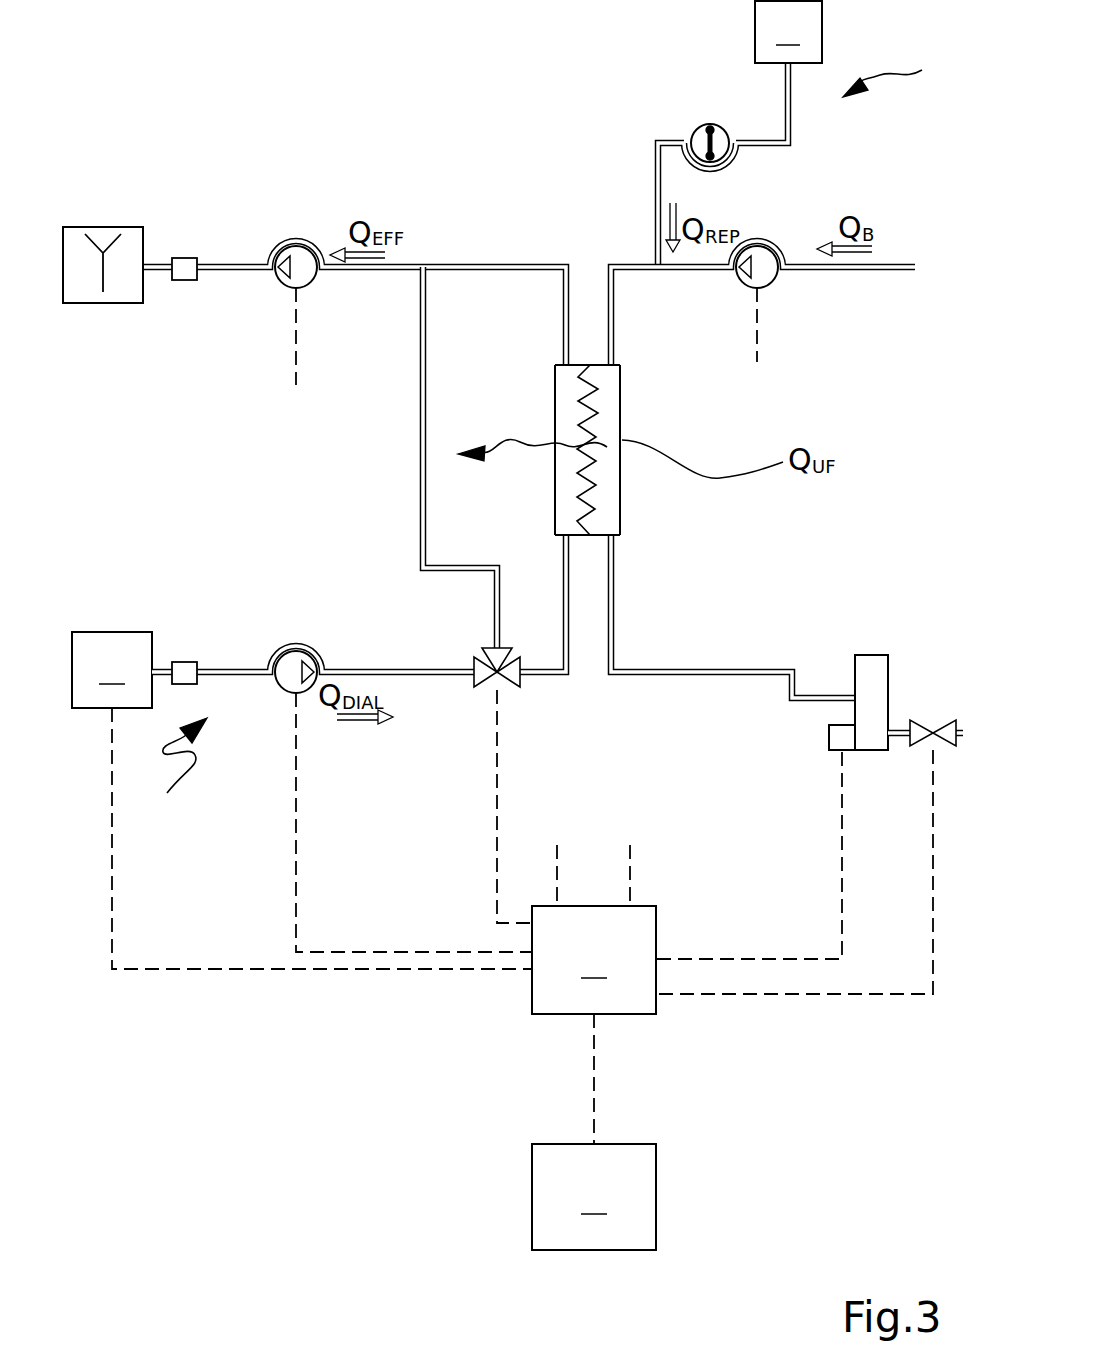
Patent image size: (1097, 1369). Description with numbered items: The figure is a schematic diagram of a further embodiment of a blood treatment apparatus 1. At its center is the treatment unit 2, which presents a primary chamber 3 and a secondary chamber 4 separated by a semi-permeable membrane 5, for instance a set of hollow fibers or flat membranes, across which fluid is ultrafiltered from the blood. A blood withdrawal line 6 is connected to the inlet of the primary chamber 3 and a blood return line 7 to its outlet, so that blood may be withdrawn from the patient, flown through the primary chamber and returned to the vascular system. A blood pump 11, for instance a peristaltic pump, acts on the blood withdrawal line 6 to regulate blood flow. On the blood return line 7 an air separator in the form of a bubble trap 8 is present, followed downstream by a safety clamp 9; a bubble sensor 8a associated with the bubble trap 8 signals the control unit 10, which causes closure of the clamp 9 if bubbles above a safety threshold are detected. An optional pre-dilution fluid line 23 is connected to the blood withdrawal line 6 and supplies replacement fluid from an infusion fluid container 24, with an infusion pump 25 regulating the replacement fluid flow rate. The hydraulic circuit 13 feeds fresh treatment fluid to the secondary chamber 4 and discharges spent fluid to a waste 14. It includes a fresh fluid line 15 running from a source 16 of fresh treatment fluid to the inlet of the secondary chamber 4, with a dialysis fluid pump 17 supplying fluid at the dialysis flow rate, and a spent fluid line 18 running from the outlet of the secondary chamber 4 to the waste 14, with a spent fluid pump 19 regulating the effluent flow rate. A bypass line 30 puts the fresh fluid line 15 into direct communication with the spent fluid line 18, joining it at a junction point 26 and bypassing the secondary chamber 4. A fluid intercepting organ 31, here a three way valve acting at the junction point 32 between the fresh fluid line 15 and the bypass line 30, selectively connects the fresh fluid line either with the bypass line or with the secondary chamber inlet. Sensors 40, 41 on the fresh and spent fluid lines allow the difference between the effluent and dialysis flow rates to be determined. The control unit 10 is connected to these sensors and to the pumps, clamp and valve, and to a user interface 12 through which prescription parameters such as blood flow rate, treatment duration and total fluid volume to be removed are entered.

The apparatus 1 is at (891, 66).
The treatment unit 2 is at (622, 517).
The primary chamber 3 is at (607, 412).
The secondary chamber 4 is at (560, 472).
The semi-permeable membrane 5 is at (583, 416).
The blood withdrawal line 6 is at (852, 270).
The blood return line 7 is at (777, 667).
The bubble trap 8 is at (875, 655).
The bubble sensor 8a is at (840, 733).
The safety clamp 9 is at (933, 728).
The control unit 10 is at (594, 922).
The blood pump 11 is at (768, 247).
The user interface 12 is at (594, 1132).
The hydraulic circuit 13 is at (172, 775).
The waste 14 is at (103, 227).
The fresh fluid line 15 is at (383, 668).
The source of fresh treatment fluid 16 is at (302, 800).
The dialysis fluid pump 17 is at (292, 660).
The spent fluid line 18 is at (398, 265).
The spent fluid pump 19 is at (295, 253).
The pre-dilution fluid line 23 is at (657, 192).
The infusion fluid container 24 is at (788, 32).
The infusion pump 25 is at (718, 127).
The junction point 26 is at (425, 265).
The bypass line 30 is at (421, 353).
The fluid intercepting organ 31 is at (520, 688).
The junction point 32 is at (493, 677).
The sensor 40 is at (193, 662).
The sensor 41 is at (192, 258).